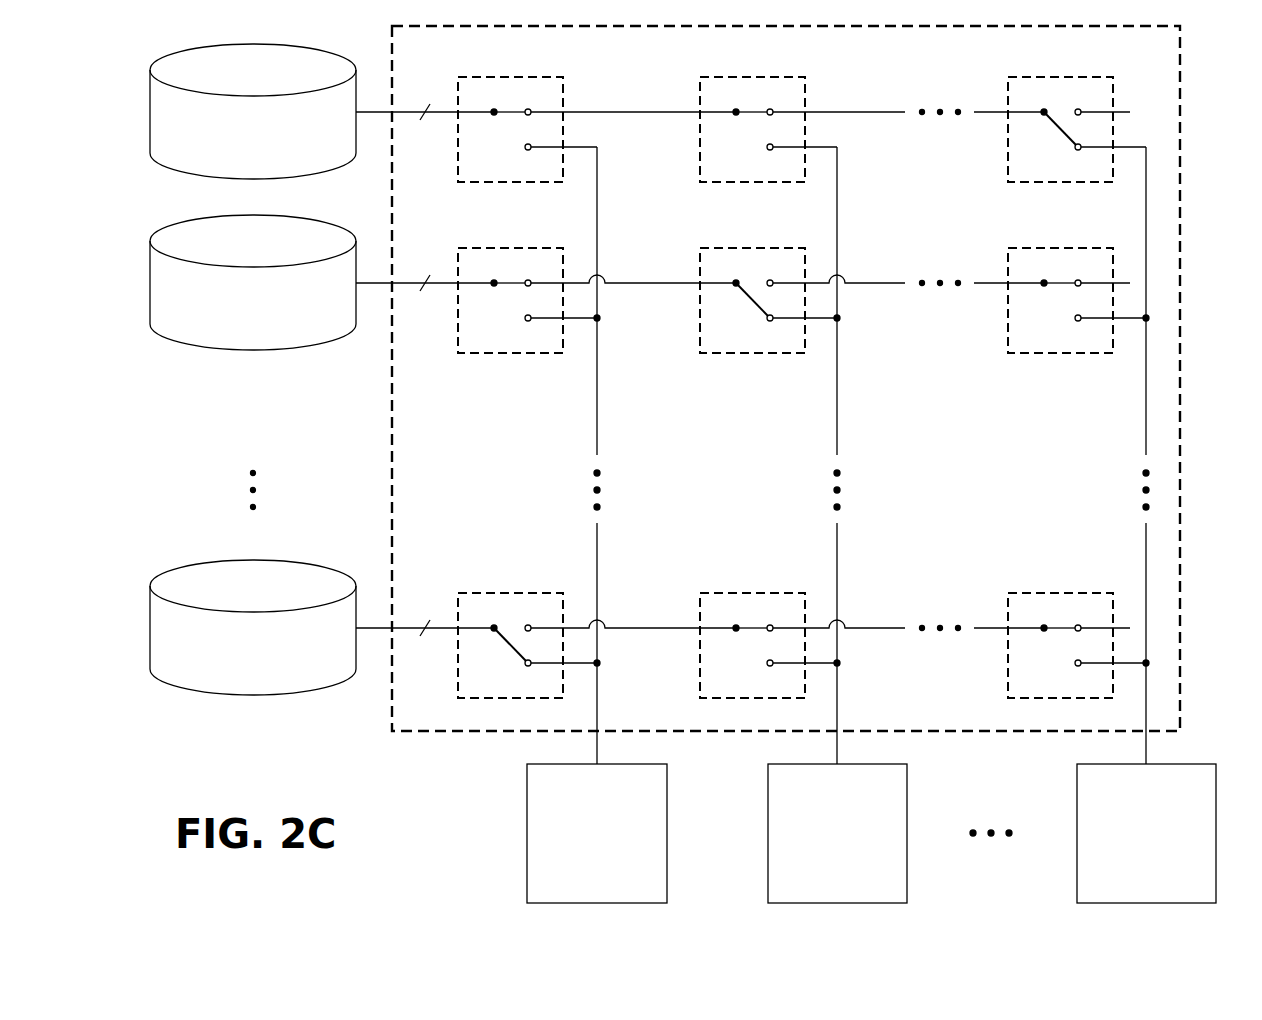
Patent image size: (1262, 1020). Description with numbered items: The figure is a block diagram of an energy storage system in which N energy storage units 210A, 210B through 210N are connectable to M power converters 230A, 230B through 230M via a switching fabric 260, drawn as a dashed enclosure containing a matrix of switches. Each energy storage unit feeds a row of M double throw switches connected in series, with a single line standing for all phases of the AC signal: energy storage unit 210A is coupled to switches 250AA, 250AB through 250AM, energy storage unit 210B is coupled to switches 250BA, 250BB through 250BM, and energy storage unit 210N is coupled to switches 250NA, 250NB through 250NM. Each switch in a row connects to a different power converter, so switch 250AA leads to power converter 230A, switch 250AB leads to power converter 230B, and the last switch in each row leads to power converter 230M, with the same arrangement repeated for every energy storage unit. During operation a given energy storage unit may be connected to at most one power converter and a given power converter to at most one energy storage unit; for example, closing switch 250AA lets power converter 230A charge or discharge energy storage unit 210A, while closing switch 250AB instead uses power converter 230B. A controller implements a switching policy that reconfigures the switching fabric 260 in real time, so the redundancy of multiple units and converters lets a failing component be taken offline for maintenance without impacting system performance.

The energy storage unit 210A is at (253, 111).
The energy storage unit 210B is at (253, 282).
The energy storage unit 210N is at (253, 627).
The power converter 230A is at (597, 833).
The power converter 230B is at (837, 833).
The power converter 230M is at (1146, 833).
The switch 250AA is at (549, 67).
The switch 250AB is at (791, 67).
The switch 250AM is at (1101, 67).
The switch 250BA is at (549, 238).
The switch 250BB is at (791, 238).
The switch 250BM is at (1101, 238).
The switch 250NA is at (549, 583).
The switch 250NB is at (791, 583).
The switch 250NM is at (1101, 583).
The switching fabric 260 is at (1181, 55).